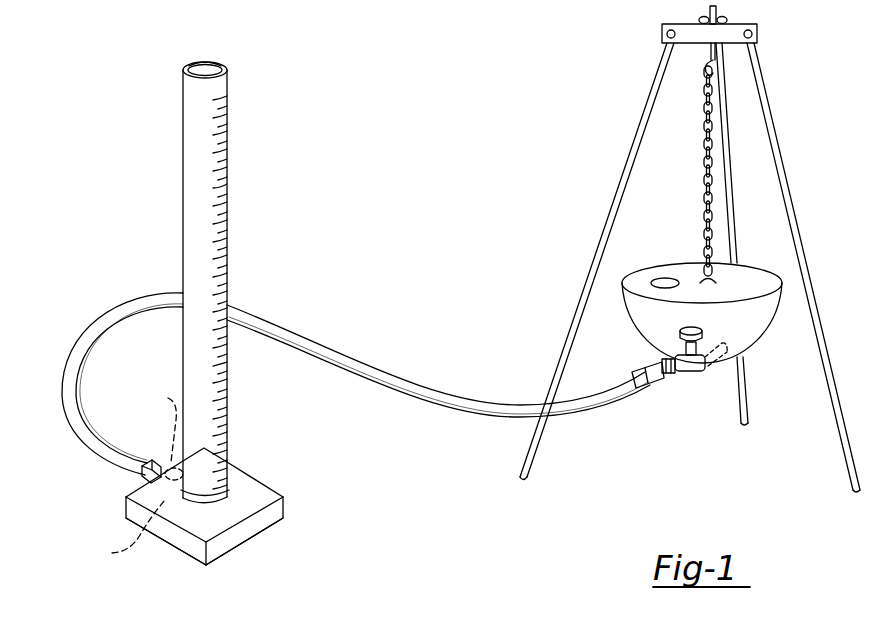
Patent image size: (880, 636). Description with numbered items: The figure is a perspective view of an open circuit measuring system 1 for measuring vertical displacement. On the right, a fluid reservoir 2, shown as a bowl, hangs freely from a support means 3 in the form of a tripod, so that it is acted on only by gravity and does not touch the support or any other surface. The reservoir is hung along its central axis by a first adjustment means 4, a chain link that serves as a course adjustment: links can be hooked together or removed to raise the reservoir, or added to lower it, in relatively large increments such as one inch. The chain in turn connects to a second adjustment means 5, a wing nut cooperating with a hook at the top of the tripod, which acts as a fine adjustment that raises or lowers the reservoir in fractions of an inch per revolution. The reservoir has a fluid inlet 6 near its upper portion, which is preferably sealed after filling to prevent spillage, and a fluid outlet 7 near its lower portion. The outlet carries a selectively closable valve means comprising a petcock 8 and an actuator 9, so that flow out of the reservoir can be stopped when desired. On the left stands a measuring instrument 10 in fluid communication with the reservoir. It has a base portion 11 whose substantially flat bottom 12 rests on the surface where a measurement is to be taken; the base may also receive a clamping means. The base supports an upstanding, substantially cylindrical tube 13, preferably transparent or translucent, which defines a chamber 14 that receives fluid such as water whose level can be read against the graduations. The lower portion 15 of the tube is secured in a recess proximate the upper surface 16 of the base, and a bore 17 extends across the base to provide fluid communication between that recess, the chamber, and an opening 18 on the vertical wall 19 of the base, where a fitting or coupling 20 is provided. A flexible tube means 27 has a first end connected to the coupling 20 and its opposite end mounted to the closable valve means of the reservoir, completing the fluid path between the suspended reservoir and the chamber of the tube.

The measuring system 1 is at (468, 110).
The fluid reservoir 2 is at (758, 340).
The support means 3 is at (662, 33).
The first adjustment means 4 is at (705, 206).
The second adjustment means 5 is at (710, 48).
The fluid inlet 6 is at (665, 281).
The fluid outlet 7 is at (672, 335).
The petcock 8 is at (696, 376).
The actuator 9 is at (725, 345).
The measuring instrument 10 is at (154, 112).
The base portion 11 is at (196, 528).
The bottom 12 is at (250, 522).
The upstanding tube 13 is at (192, 162).
The chamber 14 is at (213, 70).
The lower portion of the tube 15 is at (236, 494).
The upper surface of the base portion 16 is at (244, 476).
The bore 17 is at (114, 556).
The opening of the bore 18 is at (168, 399).
The vertical wall of the base portion 19 is at (284, 508).
The fitting or coupling 20 is at (140, 478).
The flexible tube means 27 is at (268, 332).